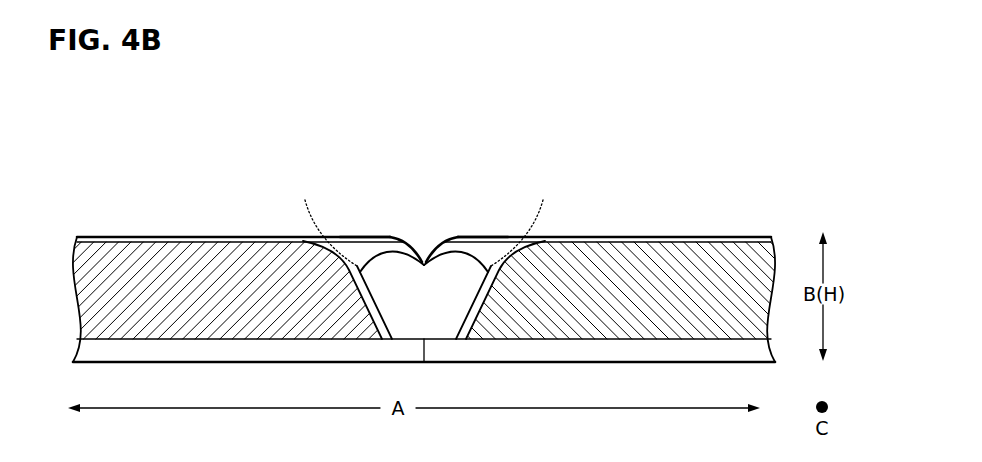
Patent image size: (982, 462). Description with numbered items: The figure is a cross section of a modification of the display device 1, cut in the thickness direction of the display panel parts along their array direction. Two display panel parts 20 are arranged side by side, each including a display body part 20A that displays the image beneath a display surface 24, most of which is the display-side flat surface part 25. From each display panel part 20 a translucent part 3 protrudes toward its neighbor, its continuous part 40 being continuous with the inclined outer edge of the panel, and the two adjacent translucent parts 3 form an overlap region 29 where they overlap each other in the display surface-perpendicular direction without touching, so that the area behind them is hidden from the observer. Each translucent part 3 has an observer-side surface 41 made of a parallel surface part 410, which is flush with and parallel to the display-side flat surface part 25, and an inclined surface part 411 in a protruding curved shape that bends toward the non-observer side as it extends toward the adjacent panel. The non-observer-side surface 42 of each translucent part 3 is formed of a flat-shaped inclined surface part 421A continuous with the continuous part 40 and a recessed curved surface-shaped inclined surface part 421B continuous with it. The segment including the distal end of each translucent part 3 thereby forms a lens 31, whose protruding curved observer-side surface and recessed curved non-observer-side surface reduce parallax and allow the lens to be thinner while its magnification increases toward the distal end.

The display device 1 is at (643, 143).
The translucent part 3 is at (353, 255).
The display panel part 20 is at (65, 238).
The display body part 20A is at (172, 303).
The display surface 24 is at (192, 237).
The display-side flat surface part 25 is at (128, 237).
The overlap region 29 is at (425, 246).
The lens 31 is at (437, 238).
The continuous part 40 is at (426, 221).
The observer-side surface 41 is at (424, 202).
The parallel surface part 410 is at (358, 237).
The inclined surface part 411 is at (425, 219).
The non-observer-side surface 42 is at (424, 292).
The flat-shaped inclined surface part 421A is at (395, 253).
The recessed curved surface-shaped inclined surface part 421B is at (456, 276).